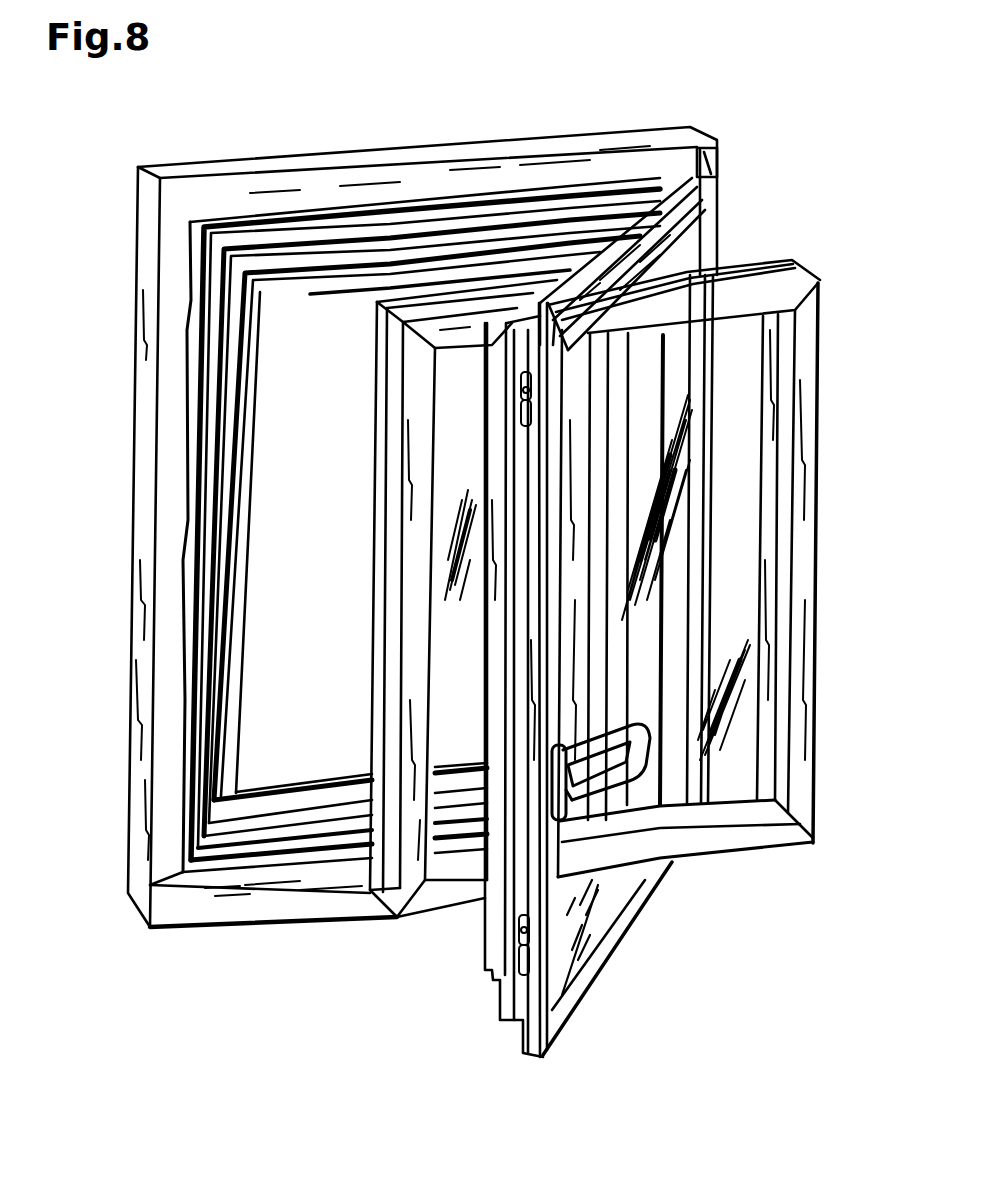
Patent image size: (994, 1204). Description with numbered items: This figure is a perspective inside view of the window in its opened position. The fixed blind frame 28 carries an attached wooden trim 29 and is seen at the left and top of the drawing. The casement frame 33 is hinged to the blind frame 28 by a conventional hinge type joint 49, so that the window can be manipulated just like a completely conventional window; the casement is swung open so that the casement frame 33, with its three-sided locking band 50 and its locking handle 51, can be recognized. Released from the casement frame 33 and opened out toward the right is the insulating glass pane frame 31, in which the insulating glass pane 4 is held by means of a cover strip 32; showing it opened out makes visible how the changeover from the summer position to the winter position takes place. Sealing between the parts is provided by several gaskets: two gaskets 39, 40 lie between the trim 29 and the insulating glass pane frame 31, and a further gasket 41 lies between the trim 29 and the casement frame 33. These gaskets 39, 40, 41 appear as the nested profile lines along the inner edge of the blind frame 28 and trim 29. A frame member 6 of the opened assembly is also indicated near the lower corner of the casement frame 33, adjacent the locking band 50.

The insulating glass pane 4 is at (737, 688).
The sash frame member 6 is at (583, 886).
The blind frame 28 is at (140, 712).
The wooden trim 29 is at (440, 215).
The insulating glass pane frame 31 is at (808, 447).
The cover strip 32 is at (800, 446).
The casement frame 33 is at (565, 987).
The gasket 39 is at (307, 247).
The gasket 40 is at (370, 267).
The gasket 41 is at (248, 226).
The hinge type joint 49 is at (710, 140).
The three-sided locking band 50 is at (510, 970).
The locking handle 51 is at (640, 772).